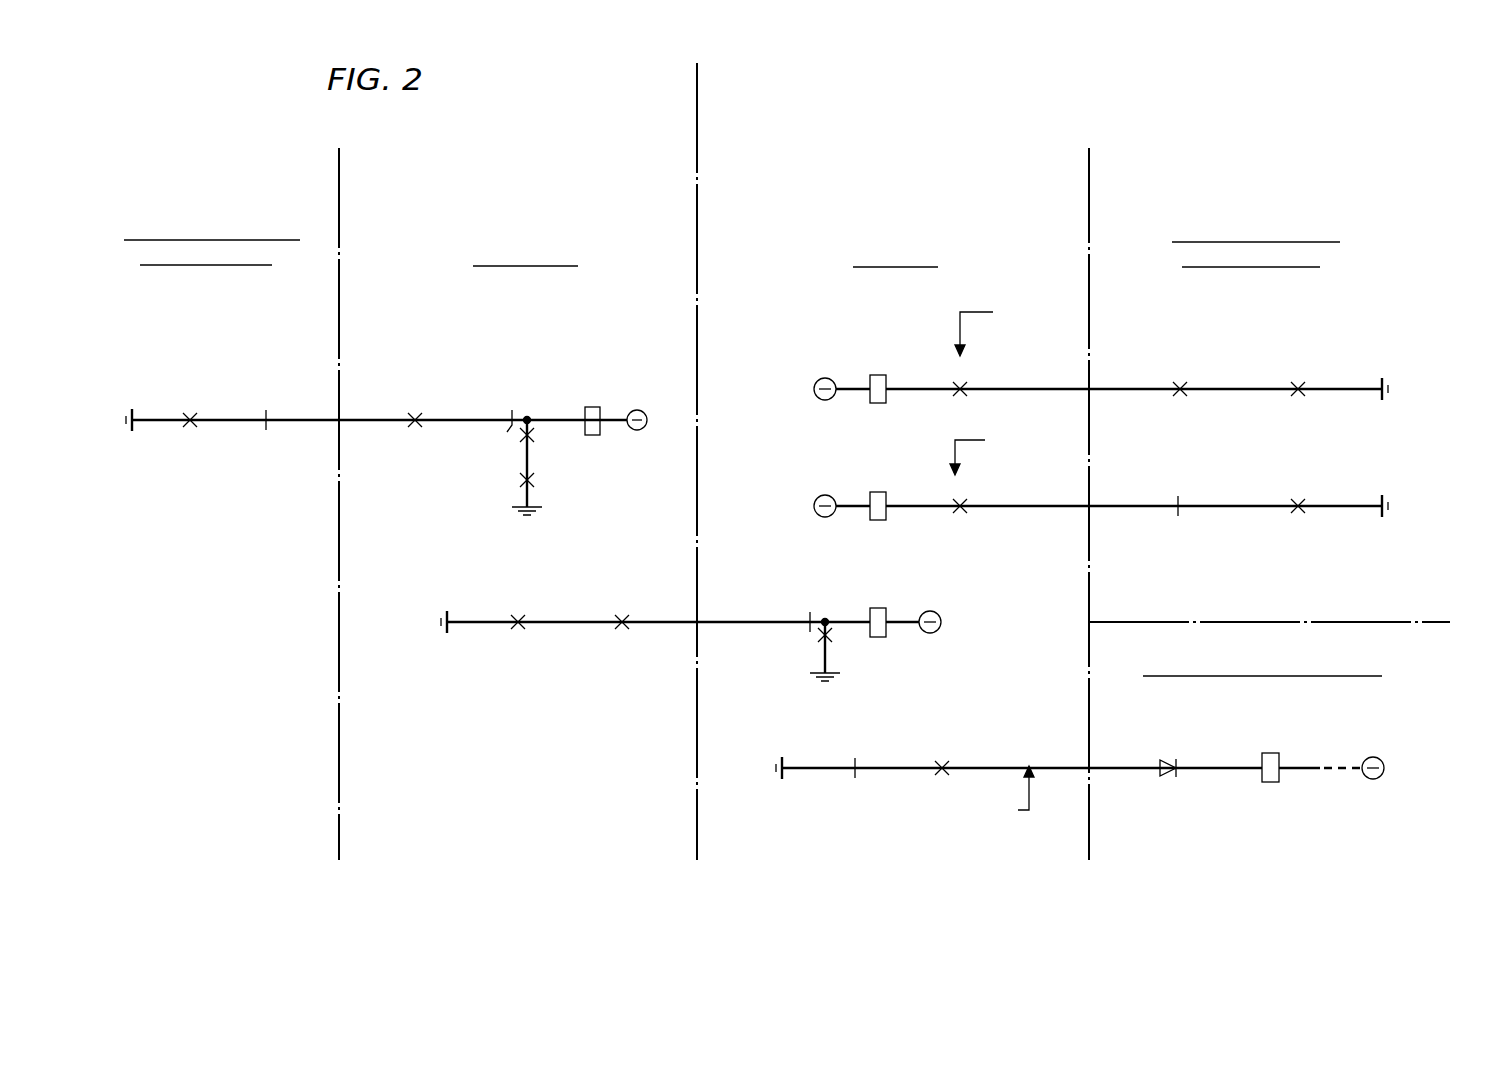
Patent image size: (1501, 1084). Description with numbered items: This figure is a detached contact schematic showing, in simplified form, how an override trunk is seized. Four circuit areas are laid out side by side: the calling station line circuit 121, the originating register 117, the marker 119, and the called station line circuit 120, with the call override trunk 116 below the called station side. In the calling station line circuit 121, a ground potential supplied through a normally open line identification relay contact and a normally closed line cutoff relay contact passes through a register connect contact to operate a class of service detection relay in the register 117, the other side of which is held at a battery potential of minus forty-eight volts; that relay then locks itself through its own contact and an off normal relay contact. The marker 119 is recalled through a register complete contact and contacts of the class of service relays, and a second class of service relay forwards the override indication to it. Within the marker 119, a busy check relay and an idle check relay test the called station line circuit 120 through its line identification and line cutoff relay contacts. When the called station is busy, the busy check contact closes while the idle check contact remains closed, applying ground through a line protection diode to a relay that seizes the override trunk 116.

The line circuit 121 is at (217, 297).
The originating register 117 is at (540, 297).
The marker 119 is at (912, 297).
The line circuit 120 is at (1270, 297).
The override trunk circuit 116 is at (1272, 703).